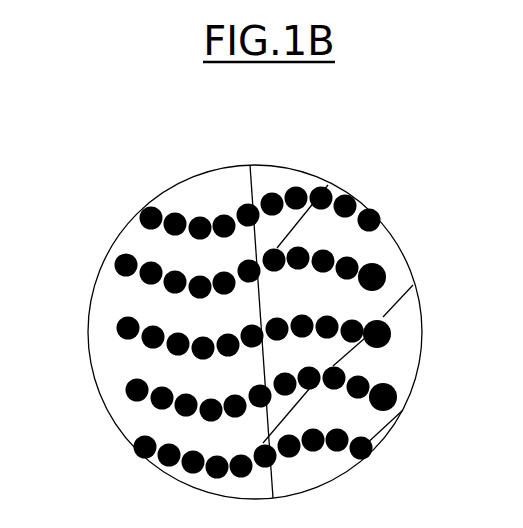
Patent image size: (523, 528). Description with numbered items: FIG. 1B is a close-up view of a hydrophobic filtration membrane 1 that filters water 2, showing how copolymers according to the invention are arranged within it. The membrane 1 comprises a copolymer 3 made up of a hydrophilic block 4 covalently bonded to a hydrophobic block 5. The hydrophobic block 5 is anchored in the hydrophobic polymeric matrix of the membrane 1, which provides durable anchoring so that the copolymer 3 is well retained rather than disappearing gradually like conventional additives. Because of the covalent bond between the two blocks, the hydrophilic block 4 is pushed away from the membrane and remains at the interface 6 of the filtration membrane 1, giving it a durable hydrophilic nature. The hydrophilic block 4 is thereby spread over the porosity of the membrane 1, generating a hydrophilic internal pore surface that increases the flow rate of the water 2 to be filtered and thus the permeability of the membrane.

The hydrophobic filtration membrane 1 is at (413, 333).
The water 2 is at (98, 348).
The copolymer 3 is at (192, 421).
The hydrophilic block 4 is at (124, 398).
The hydrophobic block 5 is at (403, 410).
The interface 6 is at (250, 165).